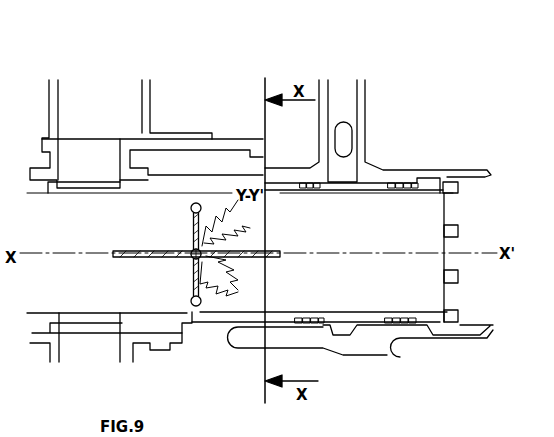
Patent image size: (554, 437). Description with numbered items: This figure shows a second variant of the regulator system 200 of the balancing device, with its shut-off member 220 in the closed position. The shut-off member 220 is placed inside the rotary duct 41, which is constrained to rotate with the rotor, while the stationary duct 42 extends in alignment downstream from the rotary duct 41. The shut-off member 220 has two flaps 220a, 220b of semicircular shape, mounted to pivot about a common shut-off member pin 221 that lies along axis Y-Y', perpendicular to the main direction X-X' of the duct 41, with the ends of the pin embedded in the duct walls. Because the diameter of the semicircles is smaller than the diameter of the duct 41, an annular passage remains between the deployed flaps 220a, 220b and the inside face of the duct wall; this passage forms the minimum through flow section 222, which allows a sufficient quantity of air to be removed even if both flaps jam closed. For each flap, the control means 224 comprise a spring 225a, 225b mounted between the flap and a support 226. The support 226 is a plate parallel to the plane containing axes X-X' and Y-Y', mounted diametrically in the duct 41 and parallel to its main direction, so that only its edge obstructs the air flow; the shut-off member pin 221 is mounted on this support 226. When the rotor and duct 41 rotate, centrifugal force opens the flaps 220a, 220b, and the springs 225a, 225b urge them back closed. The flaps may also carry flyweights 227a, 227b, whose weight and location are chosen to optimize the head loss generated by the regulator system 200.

The regulator system 200 is at (230, 113).
The rotary duct 41 is at (46, 236).
The stationary duct 42 is at (492, 226).
The shut-off member 220 is at (188, 262).
The flap 220a is at (193, 238).
The flap 220b is at (193, 292).
The shut-off member pin 221 is at (190, 258).
The minimum through flow section 222 is at (196, 203).
The control means 224 is at (270, 266).
The spring 225a is at (246, 223).
The spring 225b is at (240, 281).
The support 226 is at (276, 251).
The flyweight 227a is at (191, 208).
The flyweight 227b is at (205, 312).